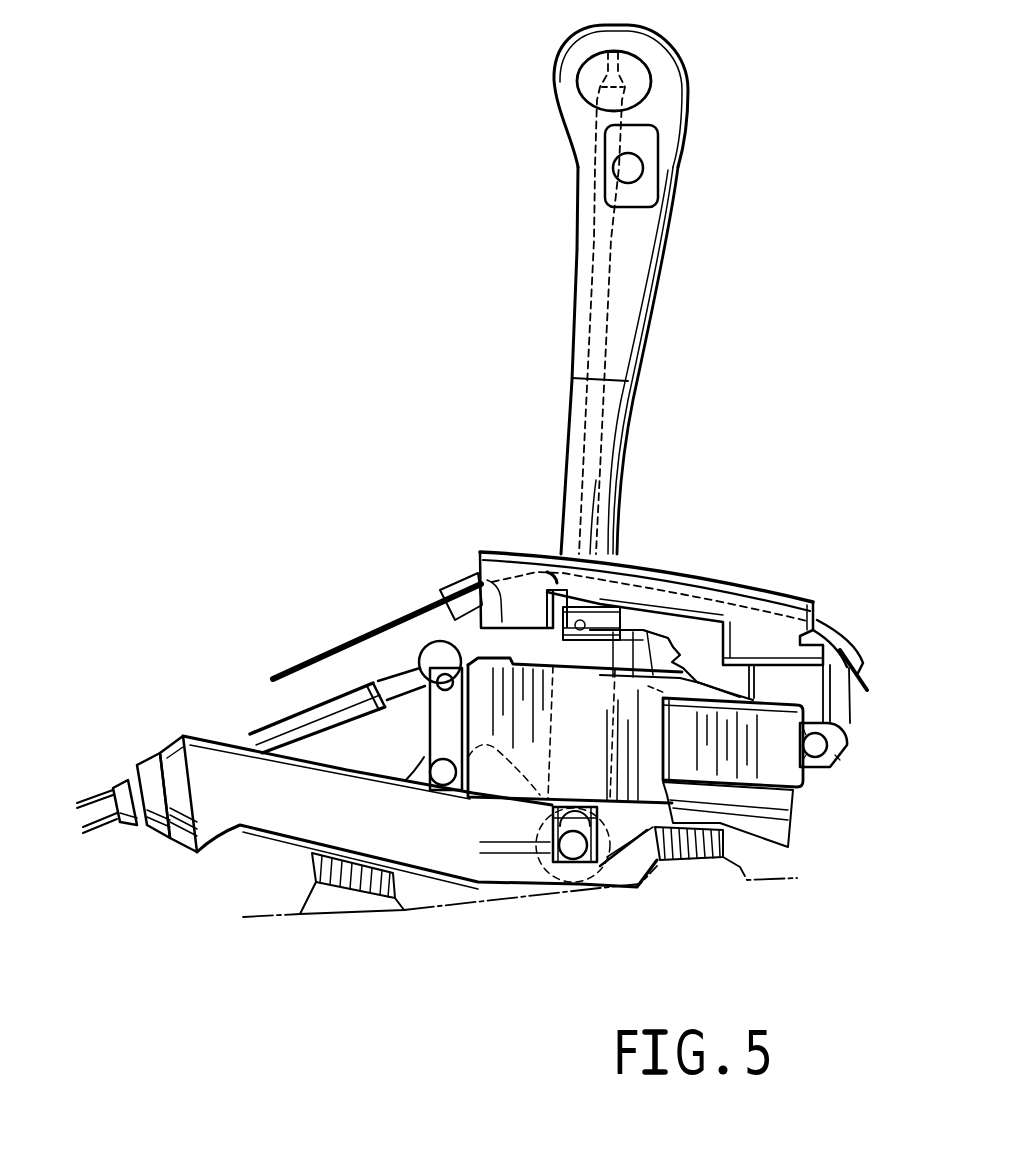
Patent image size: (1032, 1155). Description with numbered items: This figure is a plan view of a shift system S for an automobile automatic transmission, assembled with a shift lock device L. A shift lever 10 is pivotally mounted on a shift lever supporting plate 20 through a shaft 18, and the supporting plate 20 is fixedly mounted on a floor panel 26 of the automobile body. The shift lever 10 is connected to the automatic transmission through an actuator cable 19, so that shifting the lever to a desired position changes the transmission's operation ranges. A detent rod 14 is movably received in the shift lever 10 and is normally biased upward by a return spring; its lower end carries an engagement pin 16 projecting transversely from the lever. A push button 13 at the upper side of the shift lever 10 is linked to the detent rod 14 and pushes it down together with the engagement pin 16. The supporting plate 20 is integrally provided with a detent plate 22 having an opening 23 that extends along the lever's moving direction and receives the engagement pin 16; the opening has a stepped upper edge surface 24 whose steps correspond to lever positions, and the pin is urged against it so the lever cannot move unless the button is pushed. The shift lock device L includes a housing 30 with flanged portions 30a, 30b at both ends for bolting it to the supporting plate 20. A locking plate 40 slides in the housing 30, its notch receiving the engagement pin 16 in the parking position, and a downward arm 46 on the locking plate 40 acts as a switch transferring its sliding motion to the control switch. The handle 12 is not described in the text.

The shift lever 10 is at (633, 403).
The lever handle 12 is at (668, 127).
The push button 13 is at (588, 76).
The detent rod 14 is at (598, 296).
The engagement pin 16 is at (636, 623).
The shaft 18 is at (573, 852).
The actuator cable 19 is at (262, 730).
The shift lever supporting plate 20 is at (430, 852).
The detent plate 22 is at (705, 584).
The opening 23 is at (613, 708).
The stepped upper edge surface 24 is at (647, 682).
The floor panel 26 is at (613, 893).
The housing 30 is at (531, 664).
The flanged portion 30a is at (826, 770).
The flanged portion 30b is at (440, 656).
The locking plate 40 is at (590, 510).
The downward arm 46 is at (690, 623).
The shift lock device L is at (495, 652).
The shift system S is at (771, 238).